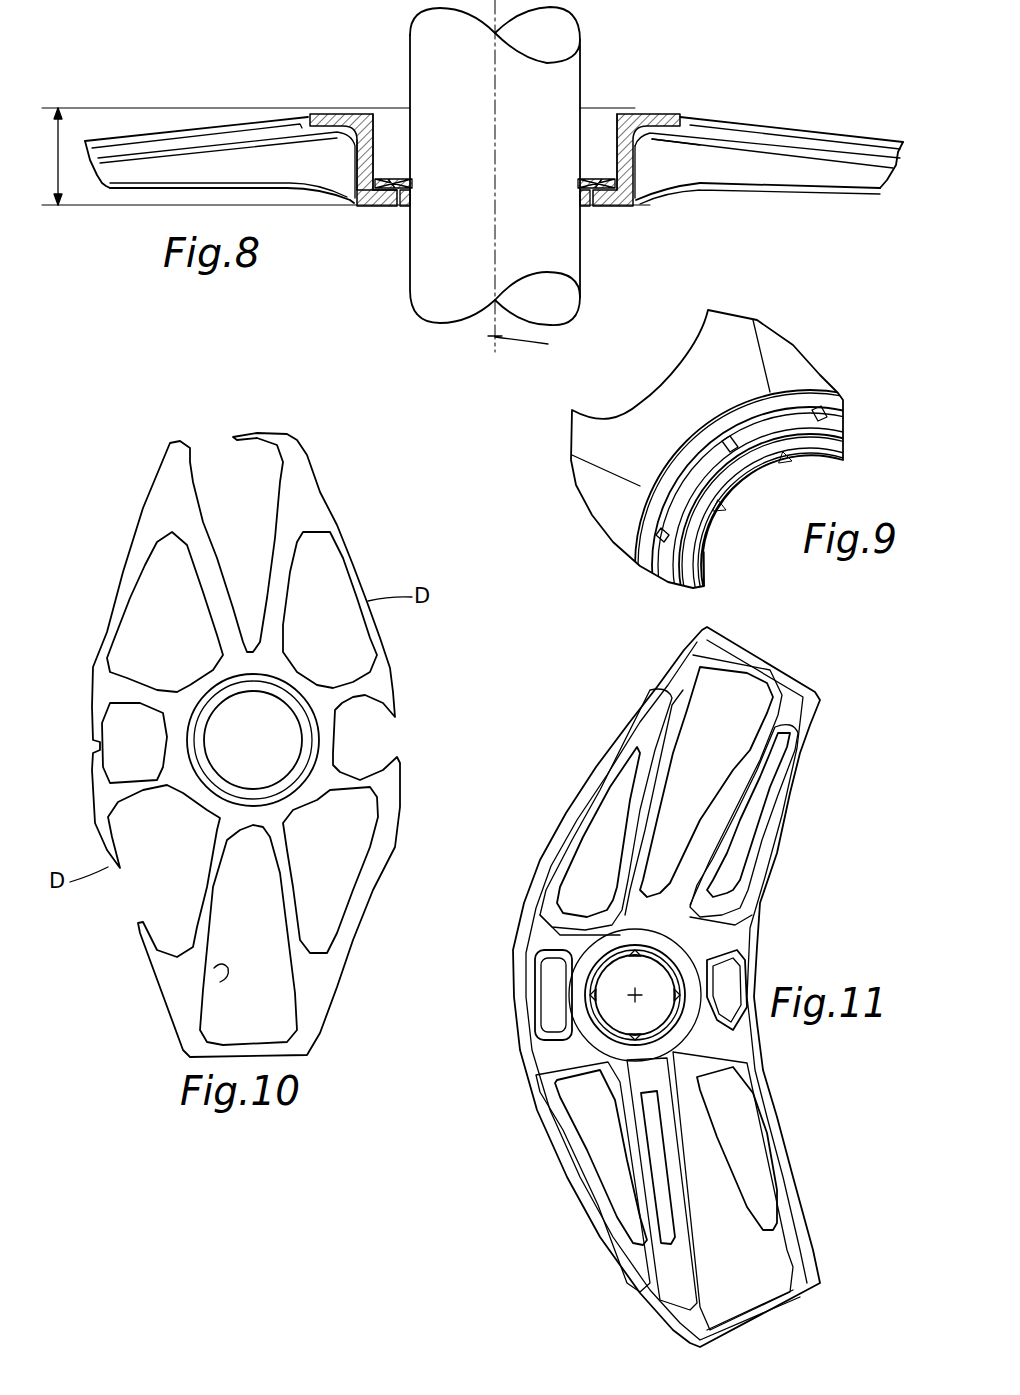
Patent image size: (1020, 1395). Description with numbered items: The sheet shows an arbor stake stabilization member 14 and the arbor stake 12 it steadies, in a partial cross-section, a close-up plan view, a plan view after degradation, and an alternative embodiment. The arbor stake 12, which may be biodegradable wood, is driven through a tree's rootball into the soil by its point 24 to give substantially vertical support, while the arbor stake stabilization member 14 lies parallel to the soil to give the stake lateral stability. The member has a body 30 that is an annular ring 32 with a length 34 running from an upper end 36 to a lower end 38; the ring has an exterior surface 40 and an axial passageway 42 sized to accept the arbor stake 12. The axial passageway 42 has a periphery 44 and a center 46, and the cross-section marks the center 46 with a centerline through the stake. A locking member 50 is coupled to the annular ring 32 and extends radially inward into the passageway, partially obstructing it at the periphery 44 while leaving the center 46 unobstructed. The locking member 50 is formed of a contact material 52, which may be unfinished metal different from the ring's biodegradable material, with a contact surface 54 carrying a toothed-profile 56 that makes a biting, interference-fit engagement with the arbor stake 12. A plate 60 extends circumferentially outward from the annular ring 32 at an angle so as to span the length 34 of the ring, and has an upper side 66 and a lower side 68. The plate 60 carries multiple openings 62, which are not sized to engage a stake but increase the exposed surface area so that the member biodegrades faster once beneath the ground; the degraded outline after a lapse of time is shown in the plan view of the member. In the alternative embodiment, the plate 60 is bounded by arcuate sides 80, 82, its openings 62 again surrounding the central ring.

In FIG. 8, the arbor stake 12 is at (586, 41).
In FIG. 11, the arbor stake 12 is at (605, 976).
In FIG. 8, the arbor stake stabilization member 14 is at (494, 125).
In FIG. 9, the arbor stake stabilization member 14 is at (720, 299).
In FIG. 10, the arbor stake stabilization member 14 is at (226, 745).
In FIG. 11, the arbor stake stabilization member 14 is at (667, 987).
In FIG. 11, the point 24 is at (631, 997).
In FIG. 8, the body 30 is at (669, 111).
In FIG. 9, the body 30 is at (852, 397).
In FIG. 10, the body 30 is at (312, 771).
In FIG. 8, the annular ring 32 is at (358, 168).
In FIG. 10, the annular ring 32 is at (300, 741).
In FIG. 8, the length 34 is at (55, 156).
In FIG. 8, the upper end 36 is at (361, 114).
In FIG. 8, the lower end 38 is at (378, 202).
In FIG. 8, the exterior surface 40 is at (652, 150).
In FIG. 8, the axial passageway 42 is at (376, 147).
In FIG. 8, the periphery 44 is at (405, 208).
In FIG. 8, the center 46 is at (532, 347).
In FIG. 8, the locking member 50 is at (604, 180).
In FIG. 9, the locking member 50 is at (852, 459).
In FIG. 9, the contact material 52 is at (712, 557).
In FIG. 8, the contact surface 54 is at (578, 184).
In FIG. 9, the contact surface 54 is at (760, 470).
In FIG. 9, the toothed-profile 56 is at (722, 504).
In FIG. 8, the plate 60 is at (167, 134).
In FIG. 9, the plate 60 is at (576, 509).
In FIG. 10, the plate 60 is at (120, 601).
In FIG. 11, the plate 60 is at (821, 698).
In FIG. 10, the multiple openings 62 is at (220, 982).
In FIG. 11, the multiple openings 62 is at (741, 873).
In FIG. 10, the upper side 66 is at (318, 511).
In FIG. 11, the lower side 68 is at (630, 738).
In FIG. 11, the arcuate side 80 is at (518, 1076).
In FIG. 11, the arcuate side 82 is at (769, 1104).